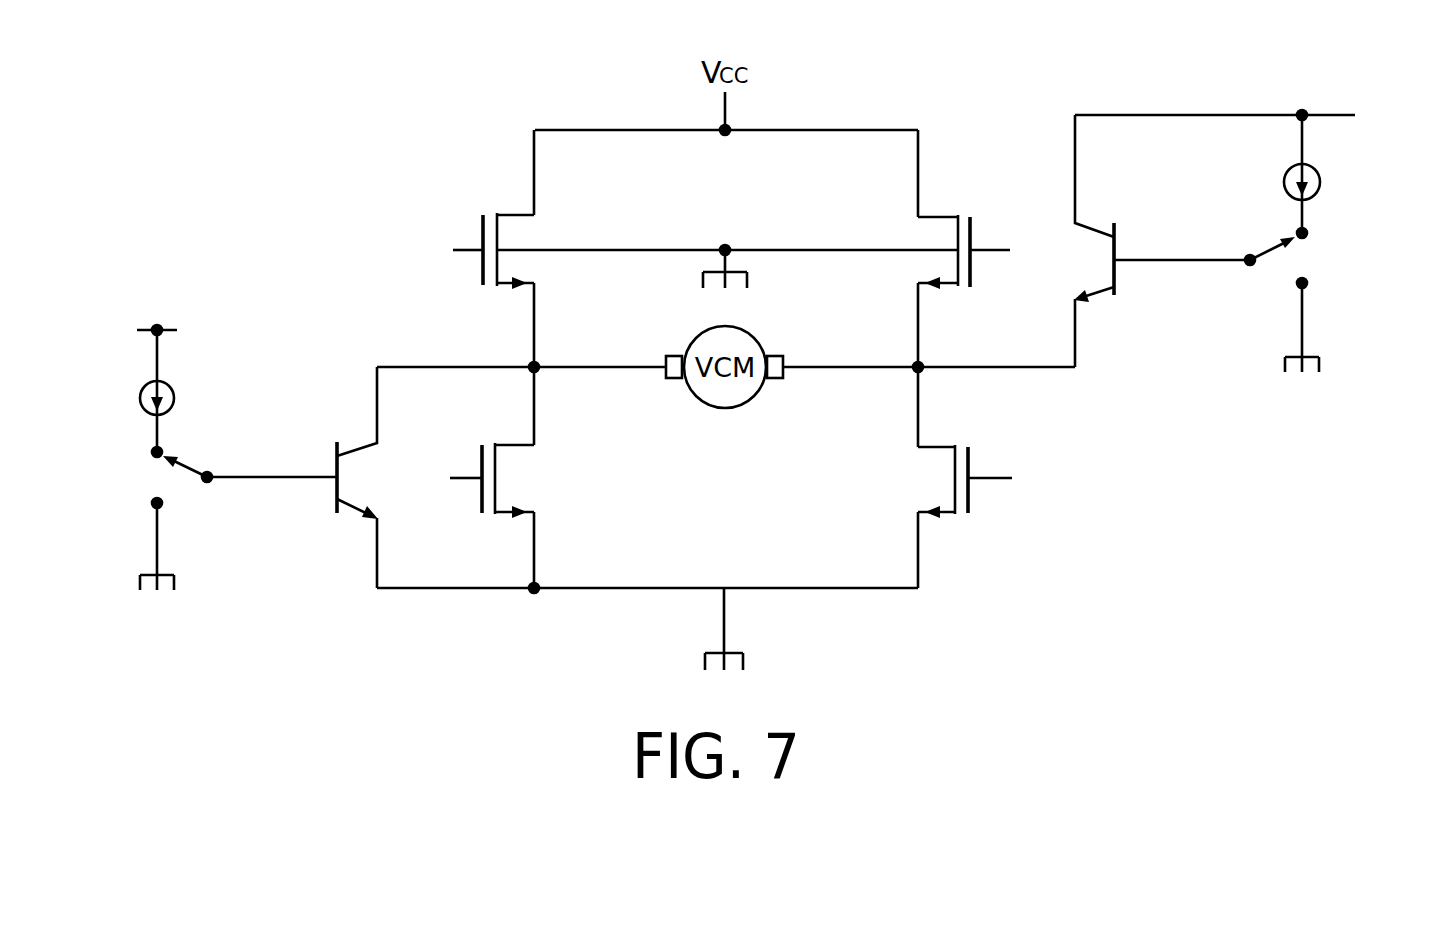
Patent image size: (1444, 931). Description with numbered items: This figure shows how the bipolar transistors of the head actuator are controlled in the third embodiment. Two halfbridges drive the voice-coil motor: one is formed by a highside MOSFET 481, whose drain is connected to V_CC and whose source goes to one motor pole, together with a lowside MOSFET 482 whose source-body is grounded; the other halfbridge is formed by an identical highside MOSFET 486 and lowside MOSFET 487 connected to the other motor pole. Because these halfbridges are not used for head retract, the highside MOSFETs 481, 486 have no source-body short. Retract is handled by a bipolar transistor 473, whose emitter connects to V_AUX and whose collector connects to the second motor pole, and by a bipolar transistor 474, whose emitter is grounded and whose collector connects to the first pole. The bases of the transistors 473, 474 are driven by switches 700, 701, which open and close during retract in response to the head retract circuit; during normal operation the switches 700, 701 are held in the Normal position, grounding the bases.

The bipolar transistor 473 is at (1116, 232).
The bipolar transistor 474 is at (367, 445).
The highside MOSFET 481 is at (518, 213).
The lowside MOSFET 482 is at (502, 515).
The highside MOSFET 486 is at (973, 243).
The lowside MOSFET 487 is at (970, 502).
The switch 700 is at (1338, 222).
The switch 701 is at (182, 428).